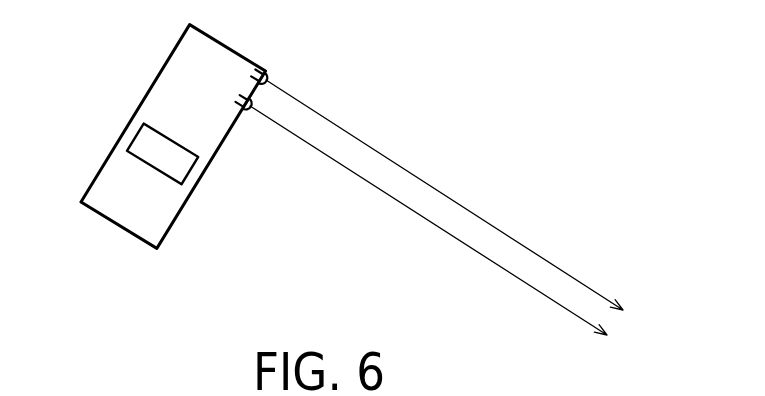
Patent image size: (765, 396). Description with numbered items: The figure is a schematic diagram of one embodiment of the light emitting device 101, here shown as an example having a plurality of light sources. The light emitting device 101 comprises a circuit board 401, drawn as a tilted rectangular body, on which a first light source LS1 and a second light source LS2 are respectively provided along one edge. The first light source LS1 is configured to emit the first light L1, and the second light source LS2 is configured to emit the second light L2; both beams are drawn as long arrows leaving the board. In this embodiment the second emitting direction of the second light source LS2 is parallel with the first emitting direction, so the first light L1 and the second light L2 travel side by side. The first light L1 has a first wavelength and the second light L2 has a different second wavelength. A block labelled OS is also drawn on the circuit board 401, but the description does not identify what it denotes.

The light emitting device 101 is at (322, 0).
The circuit board 401 is at (217, 53).
The optical sensor OS is at (162, 154).
The first light source LS1 is at (306, 62).
The second light source LS2 is at (248, 108).
The first light L1 is at (463, 203).
The second light L2 is at (446, 232).